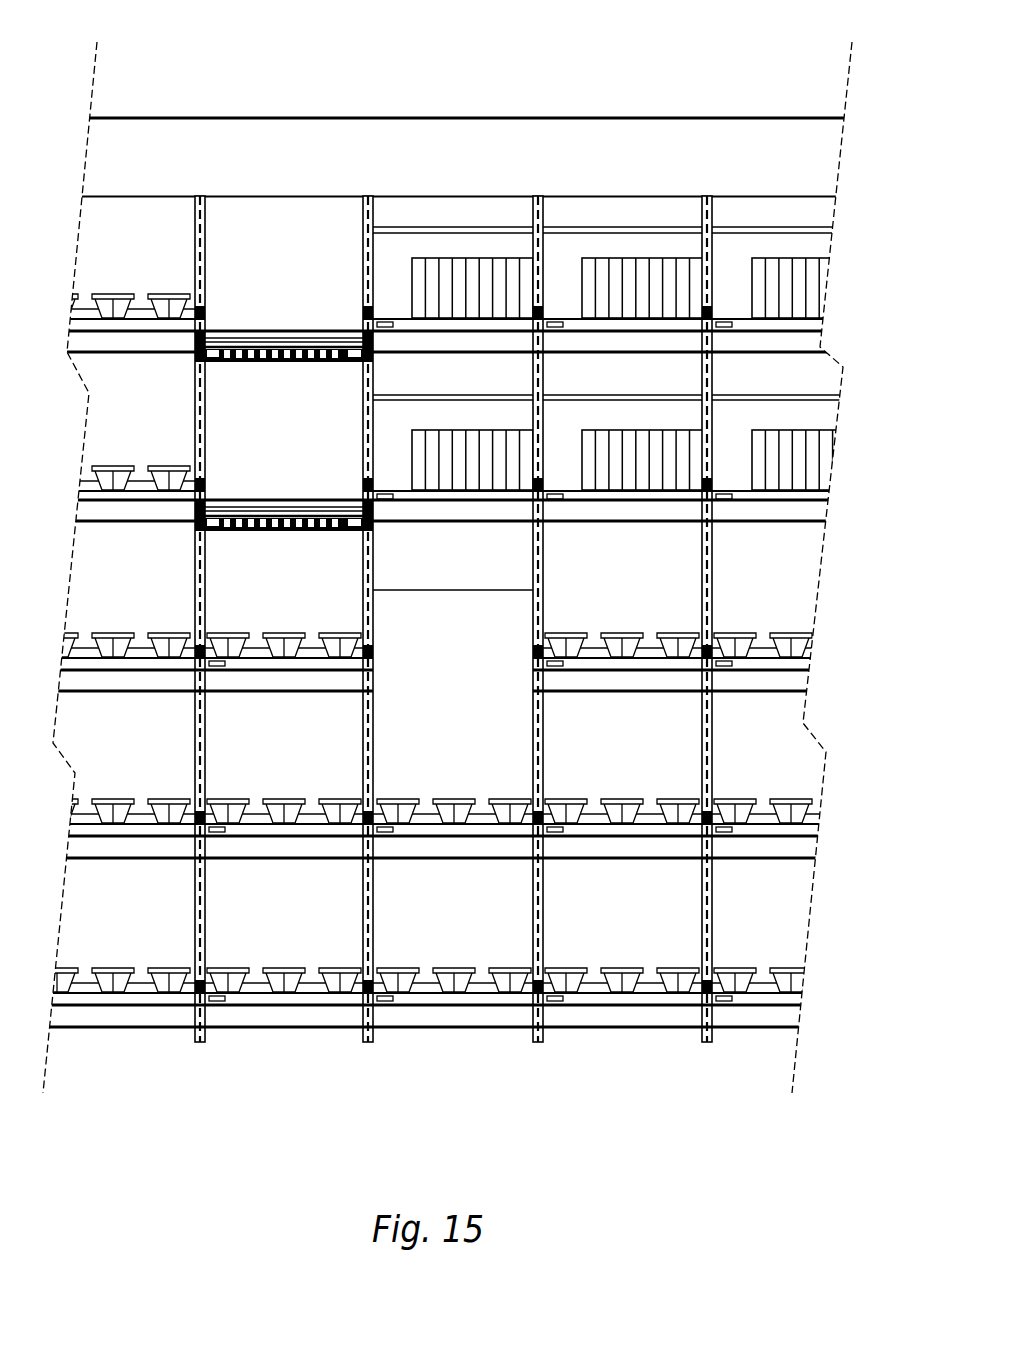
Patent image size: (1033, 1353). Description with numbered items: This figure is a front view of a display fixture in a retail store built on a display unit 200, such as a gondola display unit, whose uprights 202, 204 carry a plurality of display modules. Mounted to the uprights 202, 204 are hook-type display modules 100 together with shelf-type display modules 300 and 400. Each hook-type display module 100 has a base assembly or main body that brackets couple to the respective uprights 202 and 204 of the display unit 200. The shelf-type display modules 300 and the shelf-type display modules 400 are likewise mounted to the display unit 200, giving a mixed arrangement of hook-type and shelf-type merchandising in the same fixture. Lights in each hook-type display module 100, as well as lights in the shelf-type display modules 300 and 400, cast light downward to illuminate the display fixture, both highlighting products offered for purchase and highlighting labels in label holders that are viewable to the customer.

The display unit 200 is at (451, 546).
The upright 202 is at (368, 215).
The upright 204 is at (197, 233).
The hook-type display module 100 is at (265, 287).
The shelf-type display module 300 is at (502, 257).
The shelf-type display module 400 is at (250, 613).